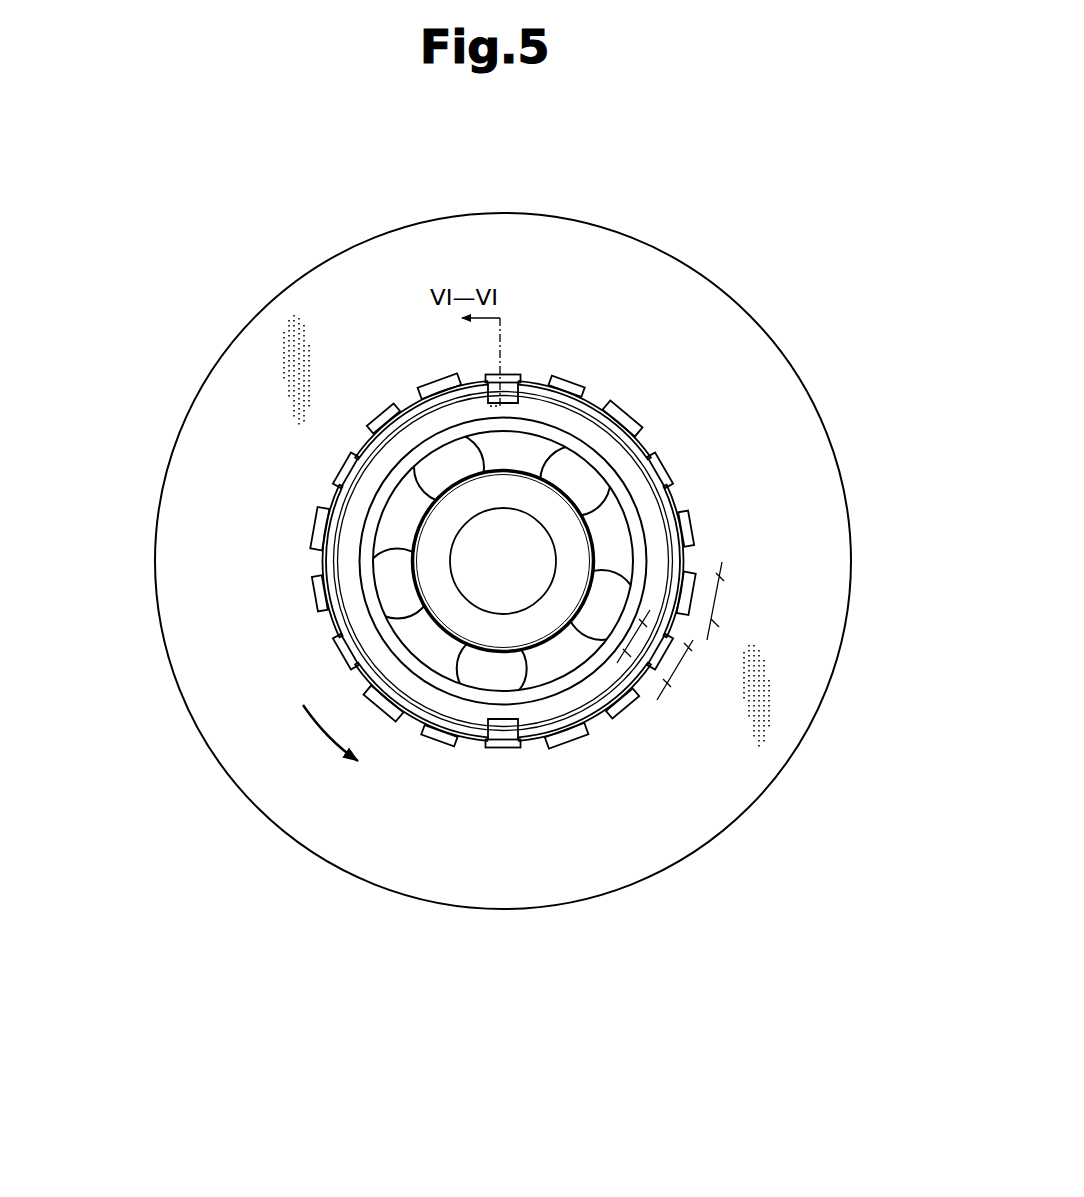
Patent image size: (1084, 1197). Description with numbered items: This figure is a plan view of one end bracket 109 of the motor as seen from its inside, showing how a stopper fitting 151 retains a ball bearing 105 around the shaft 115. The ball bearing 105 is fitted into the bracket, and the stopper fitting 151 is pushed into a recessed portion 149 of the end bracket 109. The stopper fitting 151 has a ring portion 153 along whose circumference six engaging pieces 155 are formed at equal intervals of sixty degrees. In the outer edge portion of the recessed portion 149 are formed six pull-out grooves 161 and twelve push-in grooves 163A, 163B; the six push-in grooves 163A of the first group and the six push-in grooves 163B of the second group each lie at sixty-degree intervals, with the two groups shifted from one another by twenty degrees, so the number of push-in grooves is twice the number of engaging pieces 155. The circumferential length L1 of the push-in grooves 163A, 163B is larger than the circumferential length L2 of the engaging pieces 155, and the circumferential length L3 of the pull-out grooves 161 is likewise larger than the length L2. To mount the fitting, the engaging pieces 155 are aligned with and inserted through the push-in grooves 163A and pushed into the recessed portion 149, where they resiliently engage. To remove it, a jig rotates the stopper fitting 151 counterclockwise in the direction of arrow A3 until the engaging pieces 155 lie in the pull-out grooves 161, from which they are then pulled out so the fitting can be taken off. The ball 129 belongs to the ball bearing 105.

The ball bearing 105 is at (345, 436).
The end bracket 109 is at (732, 349).
The shaft 115 is at (500, 623).
The ball 129 is at (380, 568).
The recessed portion 149 is at (512, 598).
The stopper fitting 151 is at (532, 414).
The ring portion 153 is at (613, 412).
The engaging piece 155 is at (528, 403).
The pull-out groove 161 is at (432, 383).
The push-in groove of the first group 163A is at (510, 380).
The push-in groove of the second group 163B is at (585, 396).
The arrow indicating rotation direction A3 is at (330, 743).
The length of the push-in grooves L1 is at (666, 655).
The length of the engaging pieces L2 is at (597, 700).
The length of the pull-out grooves L3 is at (730, 601).